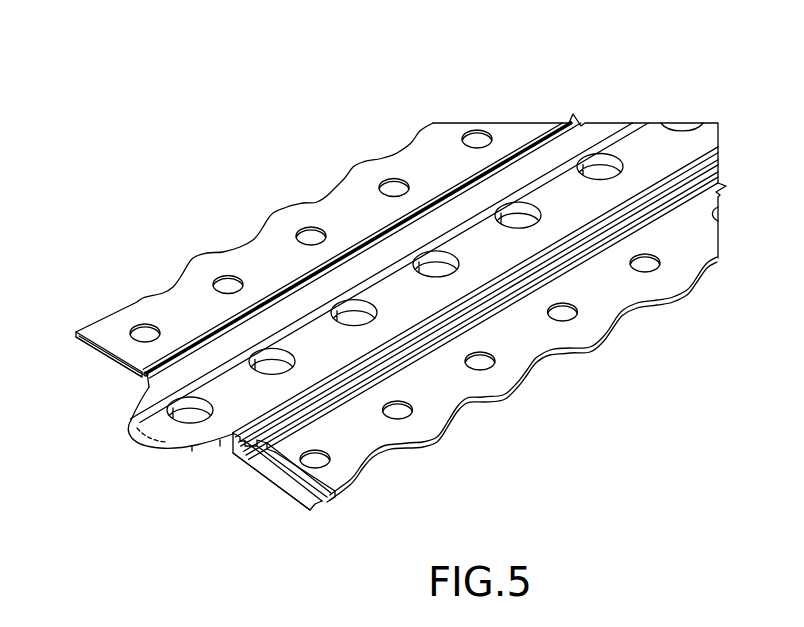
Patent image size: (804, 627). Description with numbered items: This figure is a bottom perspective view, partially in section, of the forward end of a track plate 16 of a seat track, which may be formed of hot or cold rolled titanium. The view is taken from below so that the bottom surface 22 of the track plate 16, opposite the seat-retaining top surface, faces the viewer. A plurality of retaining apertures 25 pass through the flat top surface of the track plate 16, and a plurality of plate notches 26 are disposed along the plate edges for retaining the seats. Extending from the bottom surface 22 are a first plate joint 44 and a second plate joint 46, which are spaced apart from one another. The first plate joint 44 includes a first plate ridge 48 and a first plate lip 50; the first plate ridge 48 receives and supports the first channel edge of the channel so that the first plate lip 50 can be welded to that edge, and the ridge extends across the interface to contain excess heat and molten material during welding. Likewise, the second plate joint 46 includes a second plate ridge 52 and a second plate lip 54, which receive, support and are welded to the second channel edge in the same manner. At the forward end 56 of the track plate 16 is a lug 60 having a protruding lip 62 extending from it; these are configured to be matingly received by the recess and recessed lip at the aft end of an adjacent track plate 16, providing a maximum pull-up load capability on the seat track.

The track plate 16 is at (233, 91).
The bottom surface 22 is at (262, 257).
The retaining apertures 25 is at (353, 311).
The plate notches 26 is at (393, 151).
The first plate joint 44 is at (227, 460).
The second plate joint 46 is at (118, 376).
The first plate ridge 48 is at (263, 420).
The first plate lip 50 is at (331, 385).
The second plate ridge 52 is at (175, 352).
The second plate lip 54 is at (146, 373).
The forward end 56 is at (290, 498).
The lug 60 is at (172, 436).
The protruding lip 62 is at (140, 438).